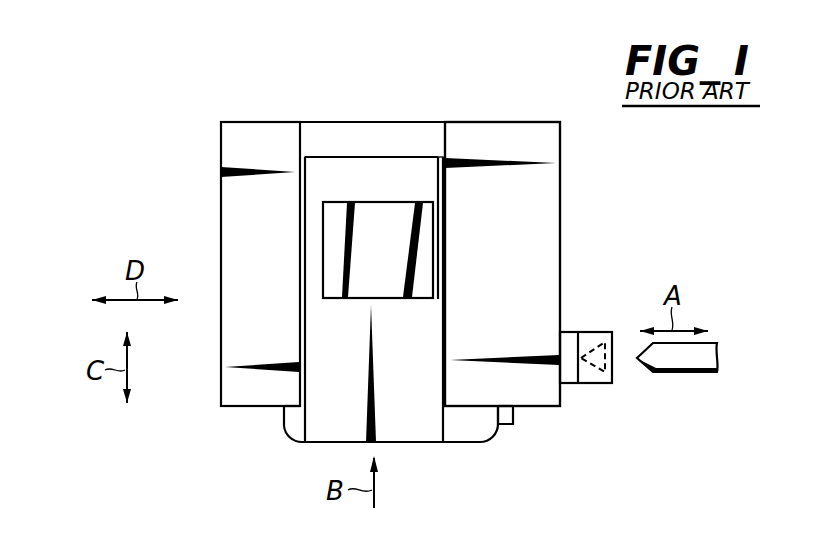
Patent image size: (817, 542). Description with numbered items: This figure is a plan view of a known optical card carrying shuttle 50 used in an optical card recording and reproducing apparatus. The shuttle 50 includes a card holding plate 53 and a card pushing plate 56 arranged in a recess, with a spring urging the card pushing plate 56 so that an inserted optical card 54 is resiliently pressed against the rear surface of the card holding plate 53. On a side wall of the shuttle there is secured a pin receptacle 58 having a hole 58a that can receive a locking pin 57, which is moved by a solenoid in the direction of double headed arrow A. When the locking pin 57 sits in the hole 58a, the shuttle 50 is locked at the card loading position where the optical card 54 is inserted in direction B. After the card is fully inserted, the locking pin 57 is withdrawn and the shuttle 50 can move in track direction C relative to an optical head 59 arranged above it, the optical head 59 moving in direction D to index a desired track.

The shuttle 50 is at (476, 452).
The card holding plate 53 is at (543, 206).
The optical card 54 is at (413, 430).
The card pushing plate 56 is at (515, 424).
The locking pin 57 is at (688, 373).
The pin receptacle 58 is at (593, 331).
The hole 58a is at (602, 357).
The optical head 59 is at (376, 202).